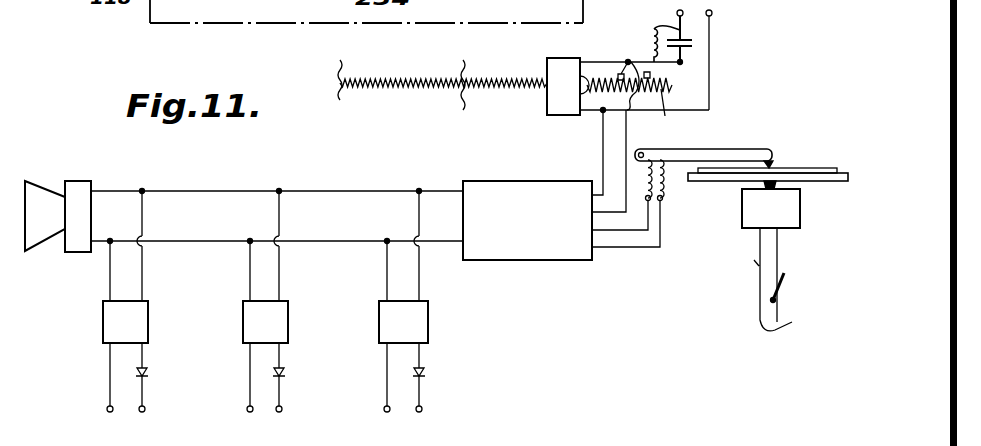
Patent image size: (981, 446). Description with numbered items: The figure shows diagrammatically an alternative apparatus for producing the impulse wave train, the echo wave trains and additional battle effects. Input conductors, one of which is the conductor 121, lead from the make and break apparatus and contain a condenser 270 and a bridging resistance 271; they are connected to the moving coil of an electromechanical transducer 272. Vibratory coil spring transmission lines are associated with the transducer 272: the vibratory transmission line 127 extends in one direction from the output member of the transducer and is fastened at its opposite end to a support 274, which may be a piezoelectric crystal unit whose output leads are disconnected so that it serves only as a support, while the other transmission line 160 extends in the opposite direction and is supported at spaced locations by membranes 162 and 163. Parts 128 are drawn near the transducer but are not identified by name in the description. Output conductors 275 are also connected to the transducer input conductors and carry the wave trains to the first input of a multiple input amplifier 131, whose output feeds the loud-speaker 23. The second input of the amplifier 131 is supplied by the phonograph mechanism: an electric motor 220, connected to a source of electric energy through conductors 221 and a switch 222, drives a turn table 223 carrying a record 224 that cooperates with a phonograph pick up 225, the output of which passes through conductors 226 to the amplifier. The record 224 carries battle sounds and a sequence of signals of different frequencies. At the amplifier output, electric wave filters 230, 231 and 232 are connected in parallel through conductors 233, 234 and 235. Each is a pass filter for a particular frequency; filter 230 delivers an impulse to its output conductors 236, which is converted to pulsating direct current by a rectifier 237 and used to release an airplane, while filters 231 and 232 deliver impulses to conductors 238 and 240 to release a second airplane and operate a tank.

The loud-speaker 23 is at (81, 187).
The input conductor 121 is at (713, 16).
The vibratory transmission line 127 is at (668, 115).
The wiper contacts 128 is at (627, 62).
The multiple input amplifier 131 is at (540, 249).
The transmission line 160 is at (463, 103).
The membrane 162 is at (340, 97).
The membrane 163 is at (463, 100).
The electric motor 220 is at (796, 218).
The conductors 221 is at (775, 312).
The switch 222 is at (785, 281).
The turn table 223 is at (732, 181).
The record 224 is at (818, 157).
The phonograph pick up 225 is at (767, 140).
The conductors 226 is at (641, 250).
The electric wave filter 230 is at (417, 324).
The electric wave filter 231 is at (275, 321).
The electric wave filter 232 is at (135, 321).
The conductors 233 is at (389, 273).
The conductors 234 is at (251, 270).
The conductors 235 is at (112, 267).
The output conductors 236 is at (414, 364).
The rectifier 237 is at (426, 373).
The conductors 238 is at (278, 390).
The conductors 240 is at (141, 390).
The condenser 270 is at (672, 10).
The bridging resistance 271 is at (650, 45).
The electromechanical transducer 272 is at (557, 107).
The support 274 is at (670, 88).
The output conductors 275 is at (603, 163).